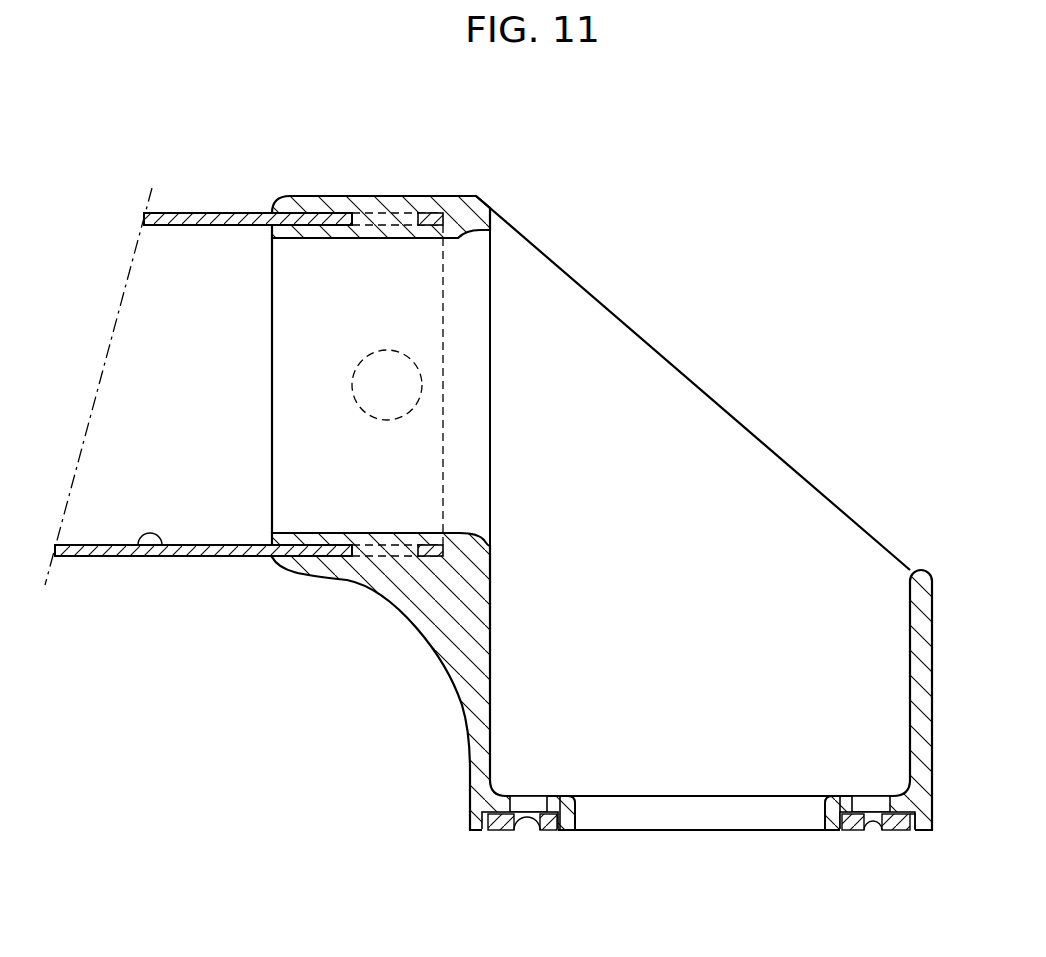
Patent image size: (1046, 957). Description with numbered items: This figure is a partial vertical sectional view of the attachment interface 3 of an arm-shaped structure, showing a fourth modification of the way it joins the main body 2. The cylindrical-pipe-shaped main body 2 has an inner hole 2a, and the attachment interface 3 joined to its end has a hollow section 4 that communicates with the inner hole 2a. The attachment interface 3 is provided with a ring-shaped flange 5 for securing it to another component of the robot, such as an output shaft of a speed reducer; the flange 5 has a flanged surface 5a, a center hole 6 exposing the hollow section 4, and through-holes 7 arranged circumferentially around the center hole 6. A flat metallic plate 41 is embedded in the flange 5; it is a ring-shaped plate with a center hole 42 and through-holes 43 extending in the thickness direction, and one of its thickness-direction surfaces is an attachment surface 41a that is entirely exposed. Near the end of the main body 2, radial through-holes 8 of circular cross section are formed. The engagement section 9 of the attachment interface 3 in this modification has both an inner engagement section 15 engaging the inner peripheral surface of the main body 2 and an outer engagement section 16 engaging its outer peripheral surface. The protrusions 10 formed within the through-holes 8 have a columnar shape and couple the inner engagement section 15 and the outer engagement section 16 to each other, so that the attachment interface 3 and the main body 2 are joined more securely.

The main body 2 is at (207, 195).
The inner hole 2a is at (158, 556).
The attachment interface 3 is at (772, 325).
The hollow section 4 is at (513, 612).
The flange 5 is at (826, 780).
The flanged surface 5a is at (561, 832).
The center hole 6 is at (812, 810).
The through-hole 7 is at (507, 797).
The through-hole 8 is at (402, 196).
The engagement section 9 is at (317, 180).
The protrusion 10 is at (333, 226).
The inner engagement section 15 is at (272, 322).
The outer engagement section 16 is at (354, 196).
The metallic plate 41 is at (918, 848).
The attachment surface 41a is at (512, 832).
The center hole 42 is at (842, 832).
The through-hole 43 is at (528, 832).